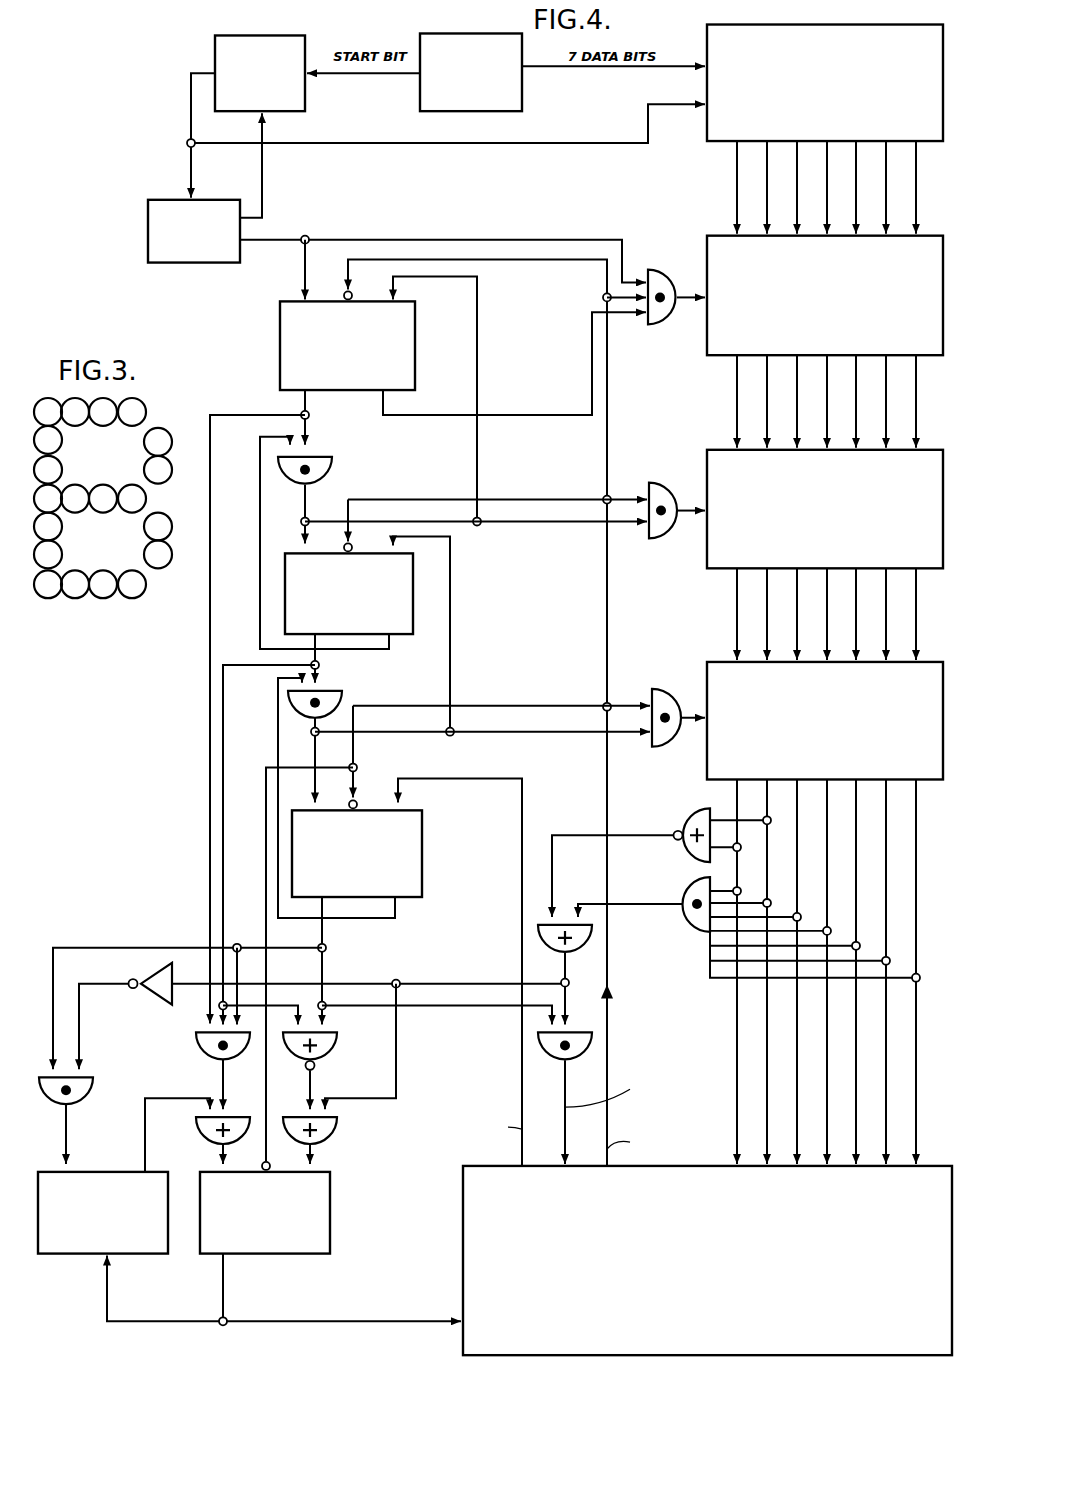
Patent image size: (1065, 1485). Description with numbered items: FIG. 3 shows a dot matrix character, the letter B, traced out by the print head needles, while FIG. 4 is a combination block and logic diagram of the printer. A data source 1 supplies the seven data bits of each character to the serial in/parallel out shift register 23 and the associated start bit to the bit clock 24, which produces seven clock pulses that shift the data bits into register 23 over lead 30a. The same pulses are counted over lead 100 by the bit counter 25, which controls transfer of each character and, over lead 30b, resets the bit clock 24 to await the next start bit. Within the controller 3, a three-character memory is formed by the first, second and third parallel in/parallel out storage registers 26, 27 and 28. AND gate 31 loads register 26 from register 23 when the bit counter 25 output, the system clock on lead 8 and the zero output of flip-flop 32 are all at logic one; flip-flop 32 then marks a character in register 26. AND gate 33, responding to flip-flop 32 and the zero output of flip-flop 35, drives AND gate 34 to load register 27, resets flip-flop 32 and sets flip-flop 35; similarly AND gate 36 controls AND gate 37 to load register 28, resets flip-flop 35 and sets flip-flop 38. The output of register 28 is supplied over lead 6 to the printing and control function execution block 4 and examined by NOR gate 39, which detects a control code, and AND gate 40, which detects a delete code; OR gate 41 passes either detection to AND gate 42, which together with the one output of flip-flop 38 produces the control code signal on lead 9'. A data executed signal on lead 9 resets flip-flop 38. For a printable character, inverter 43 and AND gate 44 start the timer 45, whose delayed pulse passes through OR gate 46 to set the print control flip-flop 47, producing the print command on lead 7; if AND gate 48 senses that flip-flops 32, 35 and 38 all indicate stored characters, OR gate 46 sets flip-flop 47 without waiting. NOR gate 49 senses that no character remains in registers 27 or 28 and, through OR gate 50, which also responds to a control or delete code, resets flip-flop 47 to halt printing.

The data source 1 is at (420, 97).
The controller portion 3 is at (718, 408).
The printing and control function execution portion 4 is at (950, 1166).
The lead 6 is at (925, 1079).
The lead 7 is at (378, 1322).
The lead 8 is at (607, 1136).
The lead 9 is at (460, 971).
The lead 9' is at (624, 1112).
The shift register 23 is at (707, 32).
The bit clock 24 is at (215, 45).
The bit counter 25 is at (212, 261).
The first parallel in/parallel out storage register 26 is at (930, 233).
The second parallel in/parallel out storage register 27 is at (935, 448).
The third parallel in/parallel out storage register 28 is at (935, 661).
The lead 30a is at (400, 141).
The lead 30b is at (262, 186).
The AND gate 31 is at (655, 323).
The flip-flop 32 is at (280, 333).
The AND gate 33 is at (333, 466).
The AND gate 34 is at (660, 538).
The flip-flop 35 is at (285, 553).
The AND gate 36 is at (340, 693).
The AND gate 37 is at (665, 746).
The flip-flop 38 is at (422, 851).
The NOR gate 39 is at (687, 858).
The AND gate 40 is at (687, 929).
The OR gate 41 is at (584, 951).
The AND gate 42 is at (584, 1060).
The inverter 43 is at (150, 1006).
The AND gate 44 is at (87, 1104).
The timer 45 is at (135, 1257).
The OR gate 46 is at (198, 1136).
The print control flip-flop 47 is at (330, 1222).
The AND gate 48 is at (199, 1054).
The NOR gate 49 is at (335, 1060).
The OR gate 50 is at (335, 1141).
The lead 100 is at (191, 115).